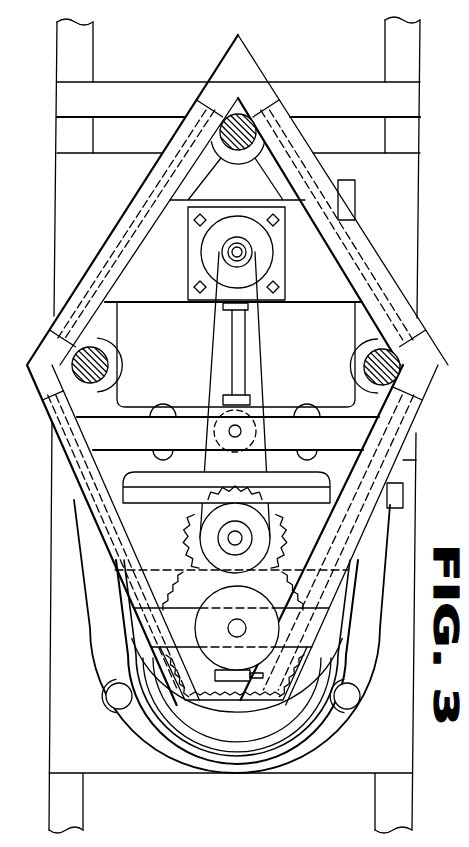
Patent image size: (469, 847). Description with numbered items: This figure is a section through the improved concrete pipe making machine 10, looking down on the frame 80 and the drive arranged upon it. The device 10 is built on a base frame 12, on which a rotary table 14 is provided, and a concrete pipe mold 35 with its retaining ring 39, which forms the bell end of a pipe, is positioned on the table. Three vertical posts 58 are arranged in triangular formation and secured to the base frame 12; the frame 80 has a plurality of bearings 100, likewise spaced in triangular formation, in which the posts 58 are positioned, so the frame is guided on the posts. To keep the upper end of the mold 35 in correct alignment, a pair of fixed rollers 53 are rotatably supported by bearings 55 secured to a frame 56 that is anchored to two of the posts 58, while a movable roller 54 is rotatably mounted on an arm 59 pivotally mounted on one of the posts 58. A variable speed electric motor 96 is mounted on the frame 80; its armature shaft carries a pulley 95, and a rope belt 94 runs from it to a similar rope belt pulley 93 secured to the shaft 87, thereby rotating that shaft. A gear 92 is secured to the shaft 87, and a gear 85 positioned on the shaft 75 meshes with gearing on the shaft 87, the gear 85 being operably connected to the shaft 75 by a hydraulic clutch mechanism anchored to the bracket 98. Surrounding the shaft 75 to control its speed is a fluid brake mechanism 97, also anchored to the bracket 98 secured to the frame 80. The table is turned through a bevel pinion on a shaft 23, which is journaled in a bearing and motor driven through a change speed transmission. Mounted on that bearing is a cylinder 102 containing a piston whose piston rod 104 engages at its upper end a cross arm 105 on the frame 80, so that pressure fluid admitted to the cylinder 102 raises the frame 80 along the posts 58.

The concrete pipe making machine 10 is at (408, 292).
The base frame 12 is at (405, 793).
The rotary table 14 is at (260, 773).
The shaft 23 is at (233, 362).
The concrete pipe mold 35 is at (183, 727).
The retaining ring 39 is at (225, 740).
The fixed rollers 53 is at (120, 710).
The movable roller 54 is at (357, 707).
The bearings 55 is at (107, 695).
The frame 56 is at (290, 463).
The posts 58 is at (227, 117).
The arm 59 is at (381, 641).
The shaft 75 is at (238, 626).
The frame 80 is at (407, 437).
The gear 85 is at (287, 687).
The shaft 87 is at (237, 538).
The gear 92 is at (200, 507).
The rope belt pulley 93 is at (260, 525).
The rope belt 94 is at (265, 372).
The pulley 95 is at (222, 250).
The variable speed electric motor 96 is at (267, 242).
The fluid brake mechanism 97 is at (210, 615).
The bracket 98 is at (318, 622).
The bearings 100 is at (218, 155).
The cylinder 102 is at (223, 412).
The piston rod 104 is at (240, 428).
The cross arm 105 is at (177, 423).